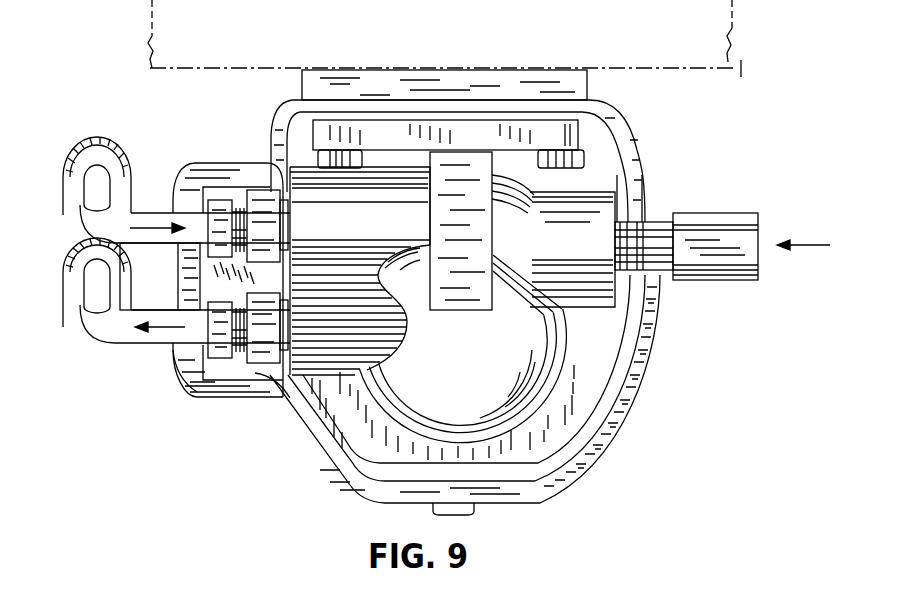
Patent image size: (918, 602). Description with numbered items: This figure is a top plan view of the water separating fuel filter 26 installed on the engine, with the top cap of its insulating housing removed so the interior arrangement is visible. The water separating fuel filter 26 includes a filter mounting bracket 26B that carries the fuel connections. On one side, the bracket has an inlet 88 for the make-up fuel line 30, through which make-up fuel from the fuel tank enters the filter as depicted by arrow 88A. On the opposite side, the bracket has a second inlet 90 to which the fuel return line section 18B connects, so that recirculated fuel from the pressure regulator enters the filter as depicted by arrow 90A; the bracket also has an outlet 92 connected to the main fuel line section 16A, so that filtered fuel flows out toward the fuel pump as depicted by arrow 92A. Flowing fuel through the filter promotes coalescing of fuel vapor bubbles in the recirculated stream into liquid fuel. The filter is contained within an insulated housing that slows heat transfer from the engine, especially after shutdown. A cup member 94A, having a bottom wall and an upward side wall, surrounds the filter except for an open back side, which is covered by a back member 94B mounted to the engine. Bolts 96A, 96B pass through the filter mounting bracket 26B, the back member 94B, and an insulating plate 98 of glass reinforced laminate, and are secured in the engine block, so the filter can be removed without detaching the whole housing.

The insulating plate 98 is at (516, 82).
The back member 94B is at (603, 106).
The bolt 96B is at (318, 160).
The bolt 96A is at (580, 160).
The inlet 90 is at (313, 223).
The arrow 90A is at (150, 205).
The fuel return line section 18B is at (145, 195).
The main fuel line section 16A is at (140, 345).
The inlet 88 is at (600, 222).
The make-up fuel line 30 is at (713, 223).
The arrow 88A is at (827, 245).
The filter mounting bracket 26B is at (513, 290).
The cup member 94A is at (650, 352).
The water separating fuel filter 26 is at (570, 418).
The outlet 92 is at (305, 378).
The arrow 92A is at (163, 333).